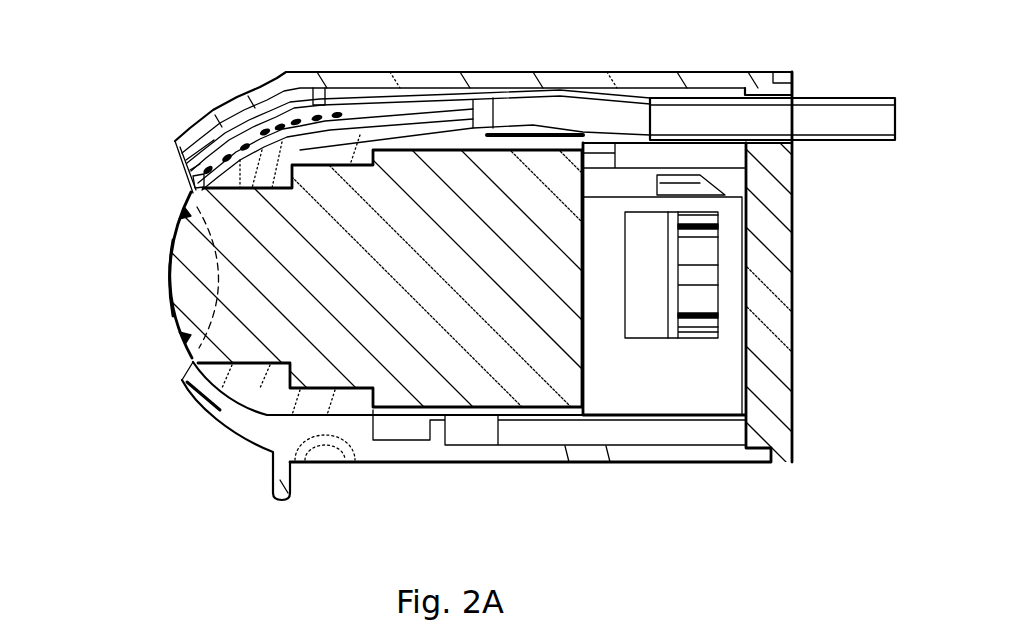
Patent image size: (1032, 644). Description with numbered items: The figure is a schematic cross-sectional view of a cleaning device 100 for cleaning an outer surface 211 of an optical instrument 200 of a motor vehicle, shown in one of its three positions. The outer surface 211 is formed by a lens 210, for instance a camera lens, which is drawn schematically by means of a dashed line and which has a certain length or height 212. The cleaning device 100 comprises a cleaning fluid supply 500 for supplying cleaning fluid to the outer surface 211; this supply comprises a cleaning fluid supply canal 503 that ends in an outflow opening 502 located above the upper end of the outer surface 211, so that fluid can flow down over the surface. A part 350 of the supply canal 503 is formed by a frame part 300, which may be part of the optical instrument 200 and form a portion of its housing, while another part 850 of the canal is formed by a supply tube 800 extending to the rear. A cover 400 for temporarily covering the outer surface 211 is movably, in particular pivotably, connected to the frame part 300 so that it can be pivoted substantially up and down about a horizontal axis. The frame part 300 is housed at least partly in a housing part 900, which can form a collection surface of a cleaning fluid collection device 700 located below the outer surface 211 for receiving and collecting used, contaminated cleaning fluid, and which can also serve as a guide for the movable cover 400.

The cleaning device 100 is at (138, 426).
The optical instrument 200 is at (393, 360).
The lens 210 is at (190, 298).
The outer surface 211 is at (160, 278).
The length or height of the outer surface 212 is at (183, 215).
The frame part 300 is at (405, 110).
The part of the supply canal 350 is at (420, 85).
The cover 400 is at (276, 112).
The cleaning fluid supply 500 is at (855, 118).
The outflow opening 502 is at (213, 117).
The cleaning fluid supply canal 503 is at (413, 128).
The cleaning fluid collection device 700 is at (226, 447).
The supply tube 800 is at (860, 143).
The part of the supply canal 850 is at (772, 76).
The housing part 900 is at (642, 82).